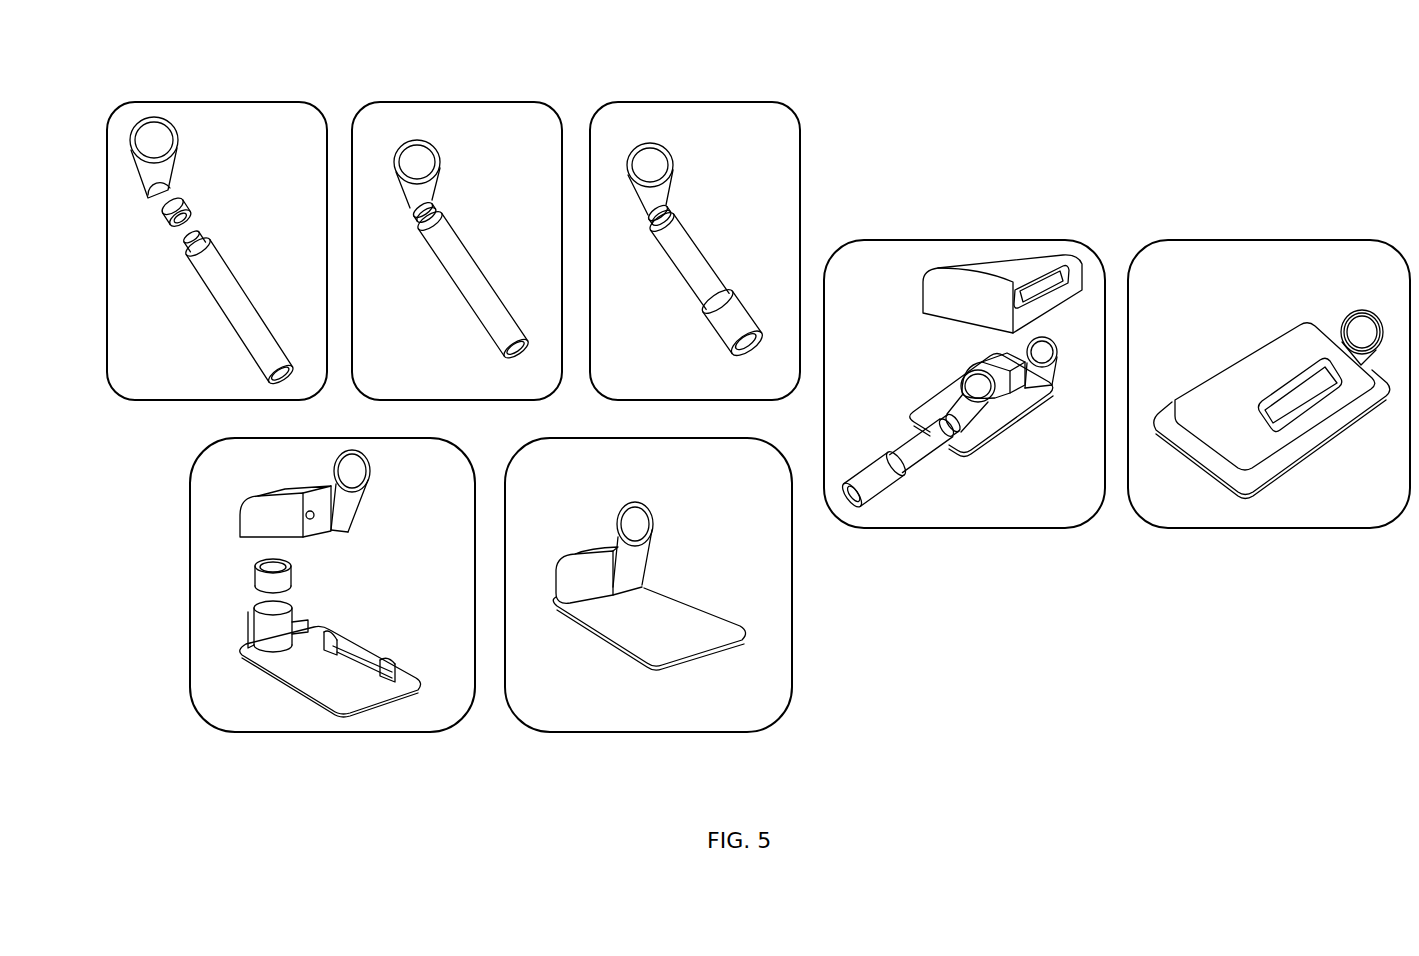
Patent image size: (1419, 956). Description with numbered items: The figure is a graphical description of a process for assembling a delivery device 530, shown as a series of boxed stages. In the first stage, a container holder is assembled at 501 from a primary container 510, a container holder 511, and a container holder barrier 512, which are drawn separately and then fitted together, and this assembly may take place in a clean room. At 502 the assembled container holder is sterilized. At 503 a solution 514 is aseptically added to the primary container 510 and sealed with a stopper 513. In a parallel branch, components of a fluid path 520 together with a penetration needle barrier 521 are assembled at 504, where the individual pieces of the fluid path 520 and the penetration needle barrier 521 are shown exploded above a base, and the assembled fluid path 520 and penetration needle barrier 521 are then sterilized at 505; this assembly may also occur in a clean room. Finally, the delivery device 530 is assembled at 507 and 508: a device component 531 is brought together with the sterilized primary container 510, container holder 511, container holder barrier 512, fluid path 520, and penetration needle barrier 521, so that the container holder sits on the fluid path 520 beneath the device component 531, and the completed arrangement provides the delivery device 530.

The container holder assembly step 501 is at (196, 90).
The container holder sterilization step 502 is at (436, 90).
The solution filling and sealing step 503 is at (690, 92).
The fluid path assembly step 504 is at (330, 752).
The fluid path sterilization step 505 is at (661, 752).
The delivery device assembly step 507 is at (993, 223).
The delivery device assembly step 508 is at (1263, 223).
The primary container 510 is at (245, 325).
The container holder 511 is at (178, 224).
The container holder barrier 512 is at (148, 168).
The stopper 513 is at (715, 315).
The solution 514 is at (683, 263).
The fluid path 520 is at (226, 550).
The penetration needle barrier 521 is at (350, 505).
The delivery device 530 is at (1335, 425).
The device component 531 is at (909, 301).